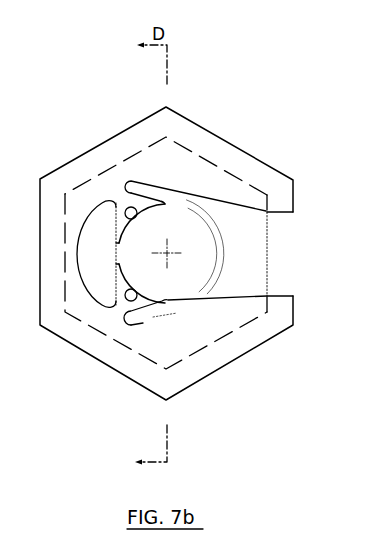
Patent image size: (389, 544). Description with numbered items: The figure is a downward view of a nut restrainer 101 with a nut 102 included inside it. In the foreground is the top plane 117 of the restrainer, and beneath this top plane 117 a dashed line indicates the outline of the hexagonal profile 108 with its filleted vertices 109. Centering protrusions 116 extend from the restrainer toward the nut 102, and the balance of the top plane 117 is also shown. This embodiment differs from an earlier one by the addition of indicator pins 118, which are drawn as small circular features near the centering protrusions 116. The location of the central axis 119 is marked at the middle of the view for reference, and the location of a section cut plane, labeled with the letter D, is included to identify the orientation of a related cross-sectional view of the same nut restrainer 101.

The nut restrainer 101 is at (120, 133).
The nut 102 is at (270, 248).
The hexagonal profile 108 is at (207, 159).
The filleted vertices 109 is at (168, 136).
The centering protrusions 116 is at (143, 318).
The top plane 117 is at (245, 211).
The indicator pins 118 is at (120, 308).
The central axis 119 is at (172, 246).